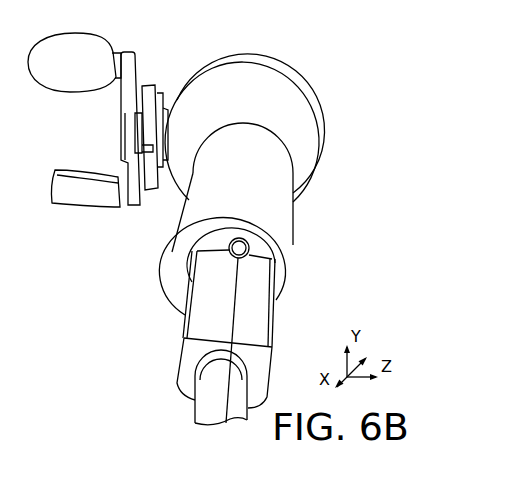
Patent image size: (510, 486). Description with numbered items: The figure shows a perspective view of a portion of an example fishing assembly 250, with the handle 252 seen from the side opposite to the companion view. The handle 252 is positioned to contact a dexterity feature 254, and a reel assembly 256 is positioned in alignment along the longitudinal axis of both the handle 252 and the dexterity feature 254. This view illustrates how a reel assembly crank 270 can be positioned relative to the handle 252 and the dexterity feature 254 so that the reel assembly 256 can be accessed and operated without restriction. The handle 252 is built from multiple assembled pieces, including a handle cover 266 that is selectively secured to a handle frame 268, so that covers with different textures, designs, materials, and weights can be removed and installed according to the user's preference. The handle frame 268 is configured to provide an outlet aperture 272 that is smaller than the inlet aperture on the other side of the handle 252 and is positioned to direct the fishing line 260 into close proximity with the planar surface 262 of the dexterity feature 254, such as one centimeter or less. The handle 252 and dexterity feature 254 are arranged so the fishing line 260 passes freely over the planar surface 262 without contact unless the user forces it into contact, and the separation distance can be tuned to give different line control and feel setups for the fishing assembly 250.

The fishing assembly 250 is at (304, 58).
The handle 252 is at (257, 185).
The dexterity feature 254 is at (185, 338).
The reel assembly 256 is at (265, 108).
The fishing line 260 is at (233, 312).
The planar surface 262 is at (237, 298).
The handle cover 266 is at (293, 244).
The handle frame 268 is at (282, 288).
The reel assembly crank 270 is at (78, 128).
The outlet aperture 272 is at (226, 245).